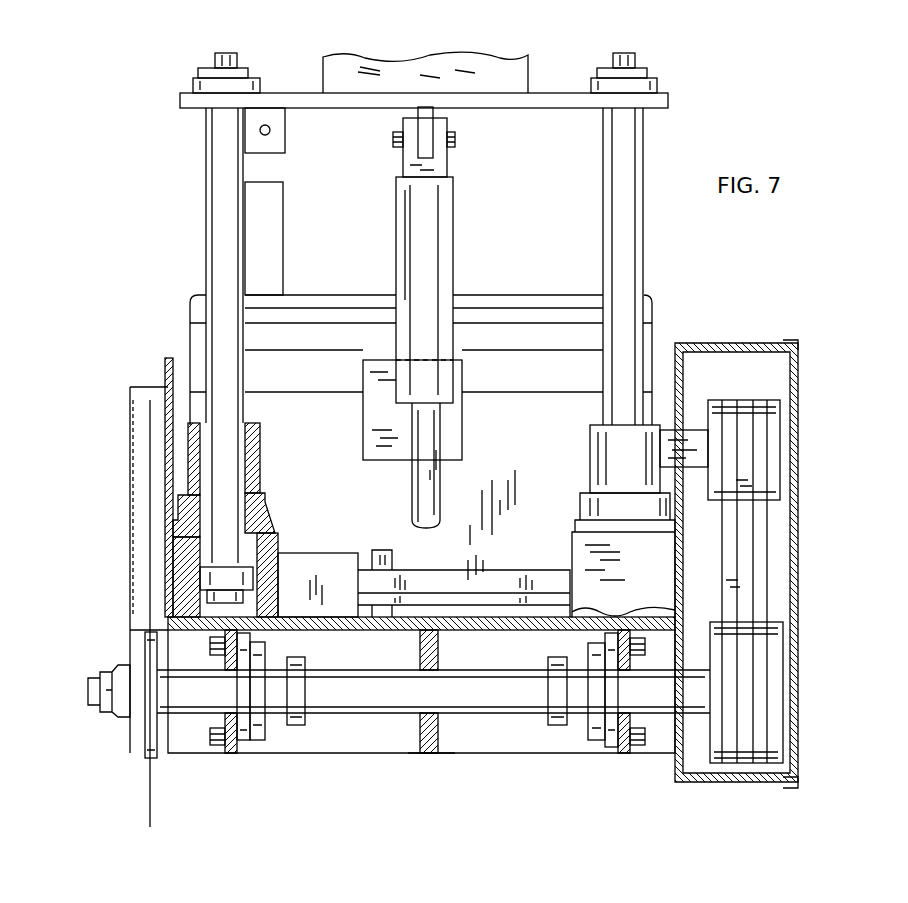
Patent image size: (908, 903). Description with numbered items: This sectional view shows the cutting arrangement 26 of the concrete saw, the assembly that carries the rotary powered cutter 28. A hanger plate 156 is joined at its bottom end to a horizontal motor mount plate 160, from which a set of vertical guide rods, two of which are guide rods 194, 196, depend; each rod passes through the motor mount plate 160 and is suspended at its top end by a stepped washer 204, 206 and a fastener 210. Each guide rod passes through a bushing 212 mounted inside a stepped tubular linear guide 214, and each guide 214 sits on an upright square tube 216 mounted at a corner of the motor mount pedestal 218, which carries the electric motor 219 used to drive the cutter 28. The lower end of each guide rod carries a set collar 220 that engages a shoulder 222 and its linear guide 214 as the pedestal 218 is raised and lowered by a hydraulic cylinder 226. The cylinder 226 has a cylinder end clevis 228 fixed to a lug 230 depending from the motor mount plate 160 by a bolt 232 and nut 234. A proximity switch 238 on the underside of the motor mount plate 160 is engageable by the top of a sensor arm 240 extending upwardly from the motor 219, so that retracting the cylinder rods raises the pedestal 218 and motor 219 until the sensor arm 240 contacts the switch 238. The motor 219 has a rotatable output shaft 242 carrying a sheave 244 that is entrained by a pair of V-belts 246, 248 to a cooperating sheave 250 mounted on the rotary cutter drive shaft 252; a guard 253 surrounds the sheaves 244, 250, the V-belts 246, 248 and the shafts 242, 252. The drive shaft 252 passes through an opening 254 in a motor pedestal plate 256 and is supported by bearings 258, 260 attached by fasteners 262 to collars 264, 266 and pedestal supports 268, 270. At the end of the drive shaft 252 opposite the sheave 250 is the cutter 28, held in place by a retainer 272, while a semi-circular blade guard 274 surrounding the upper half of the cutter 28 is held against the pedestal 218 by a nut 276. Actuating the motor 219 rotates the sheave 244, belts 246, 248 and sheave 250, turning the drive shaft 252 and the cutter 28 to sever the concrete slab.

The cutting arrangement 26 is at (748, 325).
The rotary powered cutter 28 is at (150, 822).
The hanger plate 156 is at (488, 60).
The motor mount plate 160 is at (535, 100).
The guide rod 194 is at (628, 212).
The guide rod 196 is at (210, 183).
The stepped washer 204 is at (650, 85).
The stepped washer 206 is at (200, 86).
The fastener 210 is at (232, 52).
The bushing 212 is at (258, 448).
The stepped tubular linear guide 214 is at (260, 518).
The upright square tube 216 is at (285, 556).
The motor mount pedestal 218 is at (420, 617).
The electric motor 219 is at (330, 298).
The set collar 220 is at (210, 582).
The shoulder 222 is at (185, 548).
The hydraulic cylinder 226 is at (440, 264).
The cylinder end clevis 228 is at (440, 168).
The lug 230 is at (424, 118).
The bolt 232 is at (456, 140).
The nut 234 is at (393, 140).
The proximity switch 238 is at (275, 143).
The sensor arm 240 is at (282, 216).
The output shaft 242 is at (683, 445).
The sheave 244 is at (775, 458).
The V-belt 246 is at (730, 560).
The V-belt 248 is at (765, 583).
The sheave 250 is at (780, 690).
The rotary cutter drive shaft 252 is at (360, 685).
The guard 253 is at (798, 404).
The opening 254 is at (420, 725).
The motor pedestal plate 256 is at (432, 752).
The bearing 258 is at (245, 755).
The bearing 260 is at (600, 750).
The fastener 262 is at (215, 648).
The collar 264 is at (296, 660).
The collar 266 is at (552, 660).
The pedestal support 268 is at (232, 755).
The pedestal support 270 is at (625, 756).
The retainer 272 is at (145, 650).
The semi-circular blade guard 274 is at (150, 386).
The nut 276 is at (110, 712).